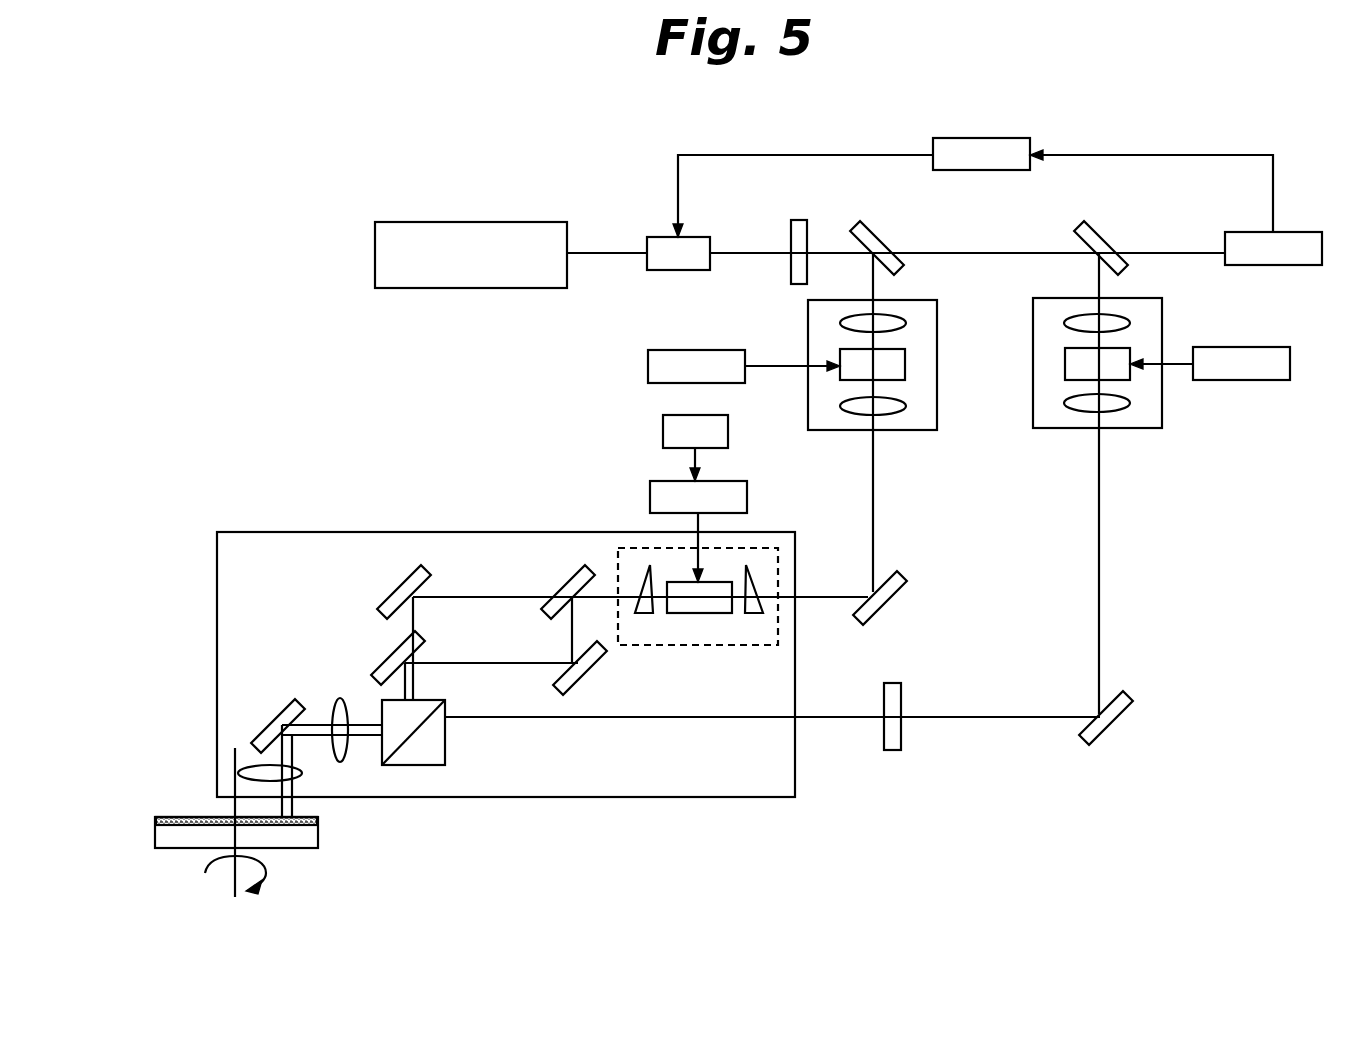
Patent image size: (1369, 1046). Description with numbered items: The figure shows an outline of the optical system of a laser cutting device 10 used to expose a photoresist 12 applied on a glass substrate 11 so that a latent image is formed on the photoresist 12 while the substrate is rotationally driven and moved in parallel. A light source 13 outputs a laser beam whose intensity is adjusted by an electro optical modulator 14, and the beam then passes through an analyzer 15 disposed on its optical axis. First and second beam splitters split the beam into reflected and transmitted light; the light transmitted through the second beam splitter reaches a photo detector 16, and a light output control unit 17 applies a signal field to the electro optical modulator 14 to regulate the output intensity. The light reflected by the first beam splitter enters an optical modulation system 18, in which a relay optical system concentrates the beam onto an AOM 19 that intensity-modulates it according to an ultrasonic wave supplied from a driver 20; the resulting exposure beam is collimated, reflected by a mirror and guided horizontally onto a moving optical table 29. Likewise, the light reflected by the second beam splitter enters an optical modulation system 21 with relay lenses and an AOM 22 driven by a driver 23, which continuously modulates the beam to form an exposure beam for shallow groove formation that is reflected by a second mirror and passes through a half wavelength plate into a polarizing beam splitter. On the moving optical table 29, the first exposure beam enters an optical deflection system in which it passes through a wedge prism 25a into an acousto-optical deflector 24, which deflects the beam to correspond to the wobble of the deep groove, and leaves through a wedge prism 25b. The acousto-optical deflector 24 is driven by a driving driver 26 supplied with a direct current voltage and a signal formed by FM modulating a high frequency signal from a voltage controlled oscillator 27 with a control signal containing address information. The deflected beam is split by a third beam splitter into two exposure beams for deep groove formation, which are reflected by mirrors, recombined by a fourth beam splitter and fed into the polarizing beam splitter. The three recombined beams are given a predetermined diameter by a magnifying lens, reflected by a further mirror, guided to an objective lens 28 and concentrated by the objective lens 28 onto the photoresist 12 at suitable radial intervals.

The laser cutting device 10 is at (400, 158).
The glass substrate 11 is at (320, 834).
The photoresist 12 is at (190, 817).
The light source 13 is at (470, 289).
The electro optical modulator 14 is at (662, 237).
The analyzer 15 is at (797, 219).
The photo detector 16 is at (1288, 232).
The light output control unit 17 is at (1000, 138).
The optical modulation system 18 is at (808, 322).
The AOM 19 is at (905, 366).
The driver 20 is at (648, 366).
The optical modulation system 21 is at (1178, 462).
The AOM 22 is at (1130, 358).
The driver 23 is at (1290, 364).
The acousto-optical deflector 24 is at (699, 614).
The wedge prism 25a is at (757, 614).
The wedge prism 25b is at (643, 614).
The driving driver 26 is at (650, 497).
The voltage controlled oscillator 27 is at (663, 432).
The objective lens 28 is at (302, 775).
The moving optical table 29 is at (431, 532).